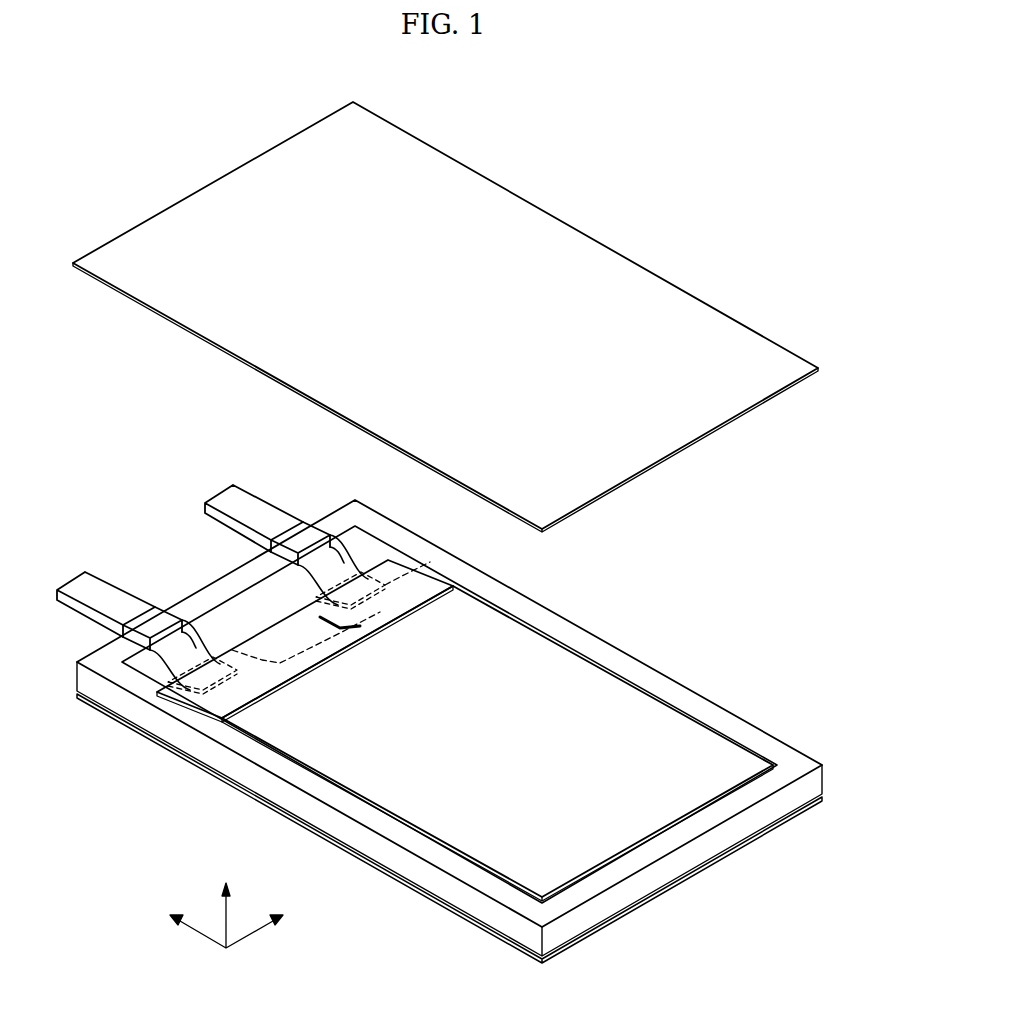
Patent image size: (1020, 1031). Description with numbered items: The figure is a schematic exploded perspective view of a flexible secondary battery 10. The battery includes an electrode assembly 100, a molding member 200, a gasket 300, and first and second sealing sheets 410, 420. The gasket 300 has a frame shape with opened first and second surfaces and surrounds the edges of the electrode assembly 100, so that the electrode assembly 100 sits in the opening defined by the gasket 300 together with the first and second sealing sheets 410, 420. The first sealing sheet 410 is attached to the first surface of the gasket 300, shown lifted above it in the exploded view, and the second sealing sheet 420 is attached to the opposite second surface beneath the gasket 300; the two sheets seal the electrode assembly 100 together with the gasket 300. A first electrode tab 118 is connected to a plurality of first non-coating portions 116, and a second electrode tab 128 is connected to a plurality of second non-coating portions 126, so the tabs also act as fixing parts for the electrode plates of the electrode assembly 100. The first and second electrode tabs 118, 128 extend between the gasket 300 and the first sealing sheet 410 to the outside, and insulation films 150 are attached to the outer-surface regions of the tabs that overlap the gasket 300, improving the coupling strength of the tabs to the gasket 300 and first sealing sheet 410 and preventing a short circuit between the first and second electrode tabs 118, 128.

The flexible secondary battery 10 is at (741, 213).
The electrode assembly 100 is at (612, 703).
The first non-coating portions 116 is at (207, 698).
The first electrode tab 118 is at (95, 584).
The second non-coating portions 126 is at (405, 573).
The second electrode tab 128 is at (241, 494).
The insulation films 150 is at (165, 623).
The molding member 200 is at (446, 590).
The gasket 300 is at (789, 760).
The first sealing sheet 410 is at (822, 370).
The second sealing sheet 420 is at (822, 797).